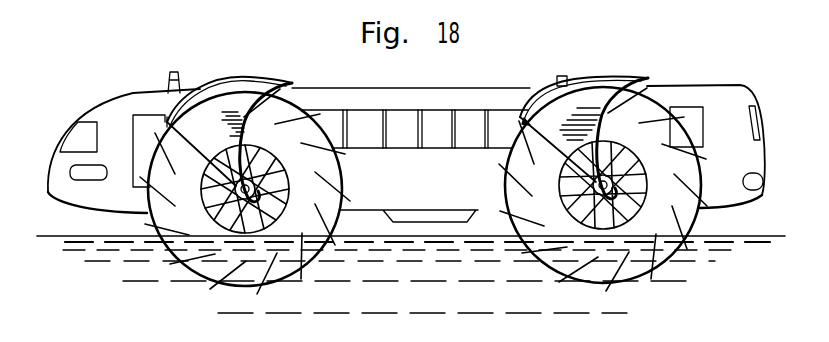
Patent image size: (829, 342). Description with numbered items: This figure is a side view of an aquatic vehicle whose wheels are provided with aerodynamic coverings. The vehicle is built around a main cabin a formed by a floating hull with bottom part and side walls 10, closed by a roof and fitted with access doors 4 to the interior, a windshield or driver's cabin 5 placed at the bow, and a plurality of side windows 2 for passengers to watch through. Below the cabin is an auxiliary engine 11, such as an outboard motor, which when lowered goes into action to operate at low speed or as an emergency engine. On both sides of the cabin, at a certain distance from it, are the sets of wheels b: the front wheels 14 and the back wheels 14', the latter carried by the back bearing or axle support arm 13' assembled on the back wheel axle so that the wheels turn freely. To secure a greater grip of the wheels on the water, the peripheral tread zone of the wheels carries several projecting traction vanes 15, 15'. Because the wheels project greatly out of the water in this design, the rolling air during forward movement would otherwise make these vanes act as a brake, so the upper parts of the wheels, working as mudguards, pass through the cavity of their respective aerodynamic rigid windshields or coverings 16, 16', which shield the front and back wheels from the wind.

The side windows 2 is at (475, 123).
The doors 4 is at (147, 123).
The windshield in driver's cabin 5 is at (82, 142).
The hull and walls of main cabin 10 is at (355, 87).
The auxiliary engine 11 is at (393, 217).
The axles support arm 13' is at (679, 185).
The front wheels 14 is at (245, 202).
The back wheels 14' is at (647, 189).
The peripheric traction vanes 15 is at (98, 215).
The peripheric traction vanes 15' is at (731, 212).
The aerodynamic rigid covering of wheels 16 is at (229, 121).
The aerodynamic rigid covering of wheels 16' is at (584, 118).
The main cabin a is at (709, 75).
The sets of wheels b is at (300, 273).